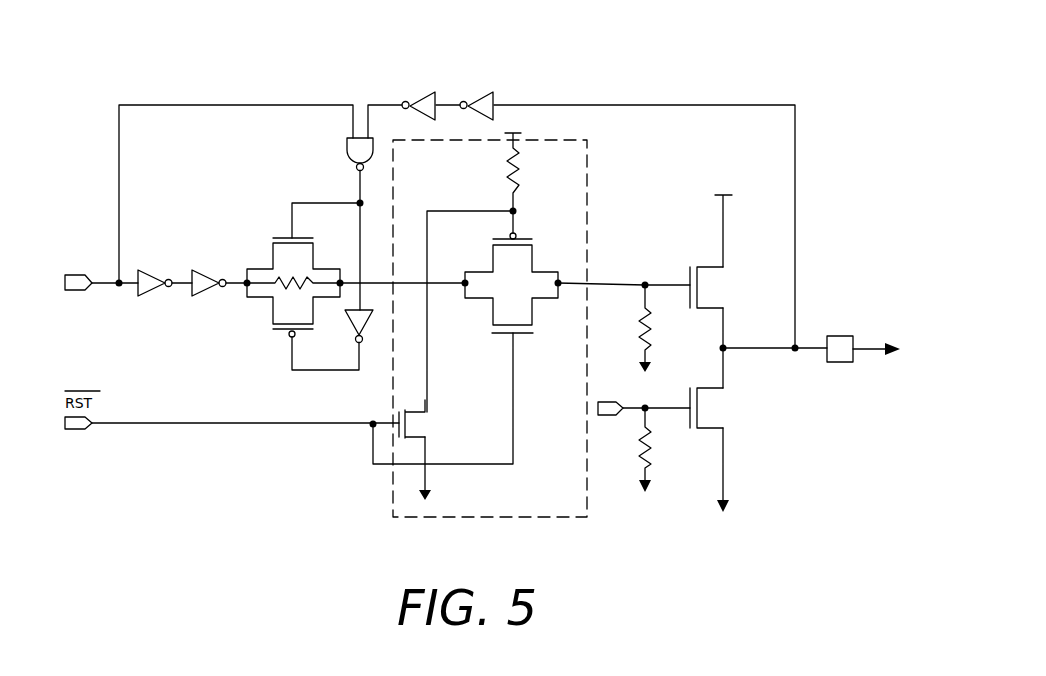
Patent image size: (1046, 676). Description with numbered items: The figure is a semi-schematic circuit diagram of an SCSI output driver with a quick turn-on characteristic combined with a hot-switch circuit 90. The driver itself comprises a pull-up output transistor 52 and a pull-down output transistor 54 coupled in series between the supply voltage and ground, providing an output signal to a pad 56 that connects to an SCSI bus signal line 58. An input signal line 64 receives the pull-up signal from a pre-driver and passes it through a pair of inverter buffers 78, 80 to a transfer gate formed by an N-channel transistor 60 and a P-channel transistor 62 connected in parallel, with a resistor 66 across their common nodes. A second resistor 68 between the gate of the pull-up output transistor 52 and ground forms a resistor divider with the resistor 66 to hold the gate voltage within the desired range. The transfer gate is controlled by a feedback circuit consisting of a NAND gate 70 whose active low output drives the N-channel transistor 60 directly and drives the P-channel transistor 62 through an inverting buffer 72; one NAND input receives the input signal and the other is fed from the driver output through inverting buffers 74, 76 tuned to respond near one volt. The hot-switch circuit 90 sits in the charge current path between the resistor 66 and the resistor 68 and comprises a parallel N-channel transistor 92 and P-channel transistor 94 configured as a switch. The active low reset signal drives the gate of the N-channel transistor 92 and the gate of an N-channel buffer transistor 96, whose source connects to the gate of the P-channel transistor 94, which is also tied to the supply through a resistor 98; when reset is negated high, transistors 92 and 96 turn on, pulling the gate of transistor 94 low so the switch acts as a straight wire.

The pull-up output transistor 52 is at (712, 288).
The pull-down output transistor 54 is at (720, 410).
The pad 56 is at (842, 345).
The SCSI bus signal line 58 is at (868, 348).
The N-channel transistor 60 is at (273, 257).
The P-channel transistor 62 is at (273, 316).
The input signal line 64 is at (86, 280).
The resistor 66 is at (299, 271).
The resistor 68 is at (655, 328).
The NAND gate 70 is at (349, 151).
The inverting buffer 72 is at (356, 322).
The inverting buffer 74 is at (428, 100).
The inverting buffer 76 is at (488, 100).
The inverter buffer 78 is at (153, 292).
The inverter buffer 80 is at (200, 292).
The hot-switch circuit 90 is at (588, 222).
The N-channel transistor 92 is at (503, 312).
The P-channel transistor 94 is at (505, 257).
The N-channel buffer transistor 96 is at (426, 426).
The resistor 98 is at (520, 178).